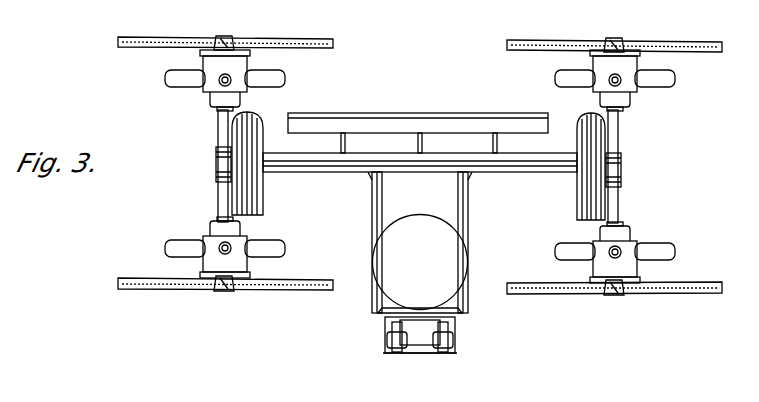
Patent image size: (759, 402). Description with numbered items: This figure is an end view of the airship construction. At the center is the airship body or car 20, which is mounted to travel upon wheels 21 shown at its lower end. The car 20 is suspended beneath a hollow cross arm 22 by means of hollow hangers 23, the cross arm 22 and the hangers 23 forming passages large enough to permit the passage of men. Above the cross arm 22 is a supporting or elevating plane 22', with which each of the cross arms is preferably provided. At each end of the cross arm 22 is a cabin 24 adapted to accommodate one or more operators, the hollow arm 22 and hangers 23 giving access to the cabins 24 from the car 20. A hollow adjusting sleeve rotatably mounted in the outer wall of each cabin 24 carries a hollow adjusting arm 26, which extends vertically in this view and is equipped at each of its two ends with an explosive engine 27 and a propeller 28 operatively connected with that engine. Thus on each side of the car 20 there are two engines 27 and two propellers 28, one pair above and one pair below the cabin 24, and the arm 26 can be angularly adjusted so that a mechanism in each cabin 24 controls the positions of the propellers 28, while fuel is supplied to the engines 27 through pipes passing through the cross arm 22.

The airship body or car 20 is at (420, 262).
The wheels 21 is at (436, 350).
The hollow cross arms 22 is at (420, 181).
The supporting or elevating plane 22' is at (418, 124).
The hollow hangers 23 is at (458, 198).
The cabin 24 is at (255, 197).
The hollow adjusting arm 26 is at (218, 130).
The explosive engine 27 is at (235, 70).
The propeller 28 is at (262, 31).